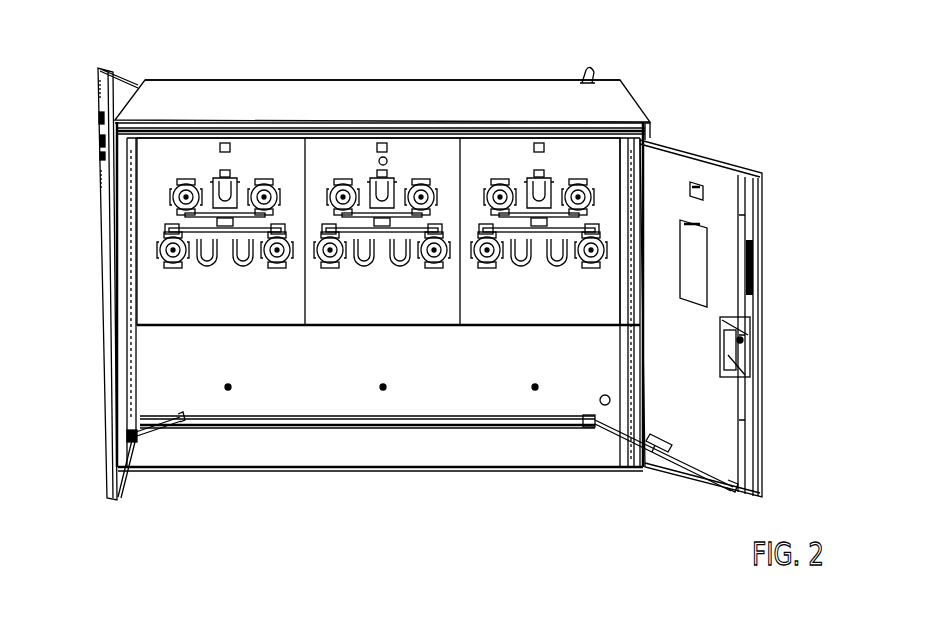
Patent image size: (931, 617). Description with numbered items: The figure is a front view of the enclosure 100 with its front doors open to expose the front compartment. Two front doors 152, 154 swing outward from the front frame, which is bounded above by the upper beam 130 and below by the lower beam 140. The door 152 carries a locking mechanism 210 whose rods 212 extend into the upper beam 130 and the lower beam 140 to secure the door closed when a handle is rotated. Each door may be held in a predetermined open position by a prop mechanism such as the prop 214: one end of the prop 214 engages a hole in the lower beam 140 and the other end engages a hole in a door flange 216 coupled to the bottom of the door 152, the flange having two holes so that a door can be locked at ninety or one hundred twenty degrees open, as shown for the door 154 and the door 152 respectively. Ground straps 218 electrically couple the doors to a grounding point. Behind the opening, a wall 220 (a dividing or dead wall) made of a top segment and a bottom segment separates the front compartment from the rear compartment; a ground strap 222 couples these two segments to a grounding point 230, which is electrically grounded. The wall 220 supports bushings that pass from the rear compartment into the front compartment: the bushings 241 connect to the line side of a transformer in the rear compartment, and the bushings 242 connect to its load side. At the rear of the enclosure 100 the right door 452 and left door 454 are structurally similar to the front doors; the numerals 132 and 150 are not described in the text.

The enclosure 100 is at (172, 38).
The upper beam 130 is at (350, 133).
The roof top panel 132 is at (382, 40).
The lower beam 140 is at (327, 460).
The roof 150 is at (383, 0).
The door 152 is at (717, 177).
The door 154 is at (110, 423).
The locking mechanism 210 is at (743, 353).
The rods 212 is at (740, 297).
The prop 214 is at (593, 427).
The door flange 216 is at (670, 440).
The ground straps 218 is at (140, 440).
The wall 220 is at (397, 313).
The ground strap 222 is at (620, 355).
The grounding point 230 is at (627, 393).
The bushings 241 is at (265, 183).
The bushings 242 is at (277, 262).
The right door 452 is at (108, 100).
The left door 454 is at (600, 73).